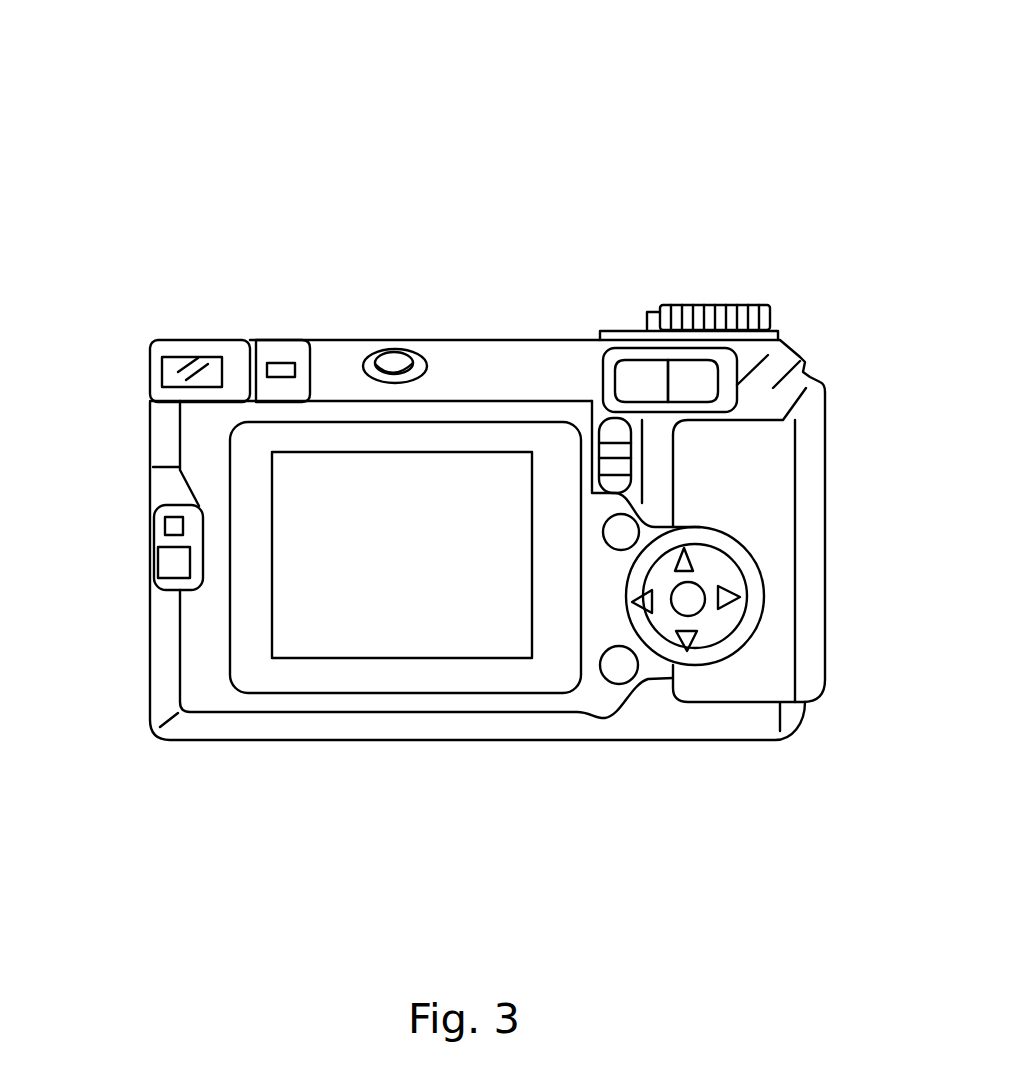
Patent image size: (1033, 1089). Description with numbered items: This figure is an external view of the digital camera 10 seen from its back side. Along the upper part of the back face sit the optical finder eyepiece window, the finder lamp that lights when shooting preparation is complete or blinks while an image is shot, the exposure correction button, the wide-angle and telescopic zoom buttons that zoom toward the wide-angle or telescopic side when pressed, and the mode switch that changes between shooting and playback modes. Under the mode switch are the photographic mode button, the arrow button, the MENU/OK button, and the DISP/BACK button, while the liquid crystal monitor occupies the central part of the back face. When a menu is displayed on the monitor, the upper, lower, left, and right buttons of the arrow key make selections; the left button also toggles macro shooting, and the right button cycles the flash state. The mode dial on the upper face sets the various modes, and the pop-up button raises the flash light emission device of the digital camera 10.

The digital camera 10 is at (490, 135).